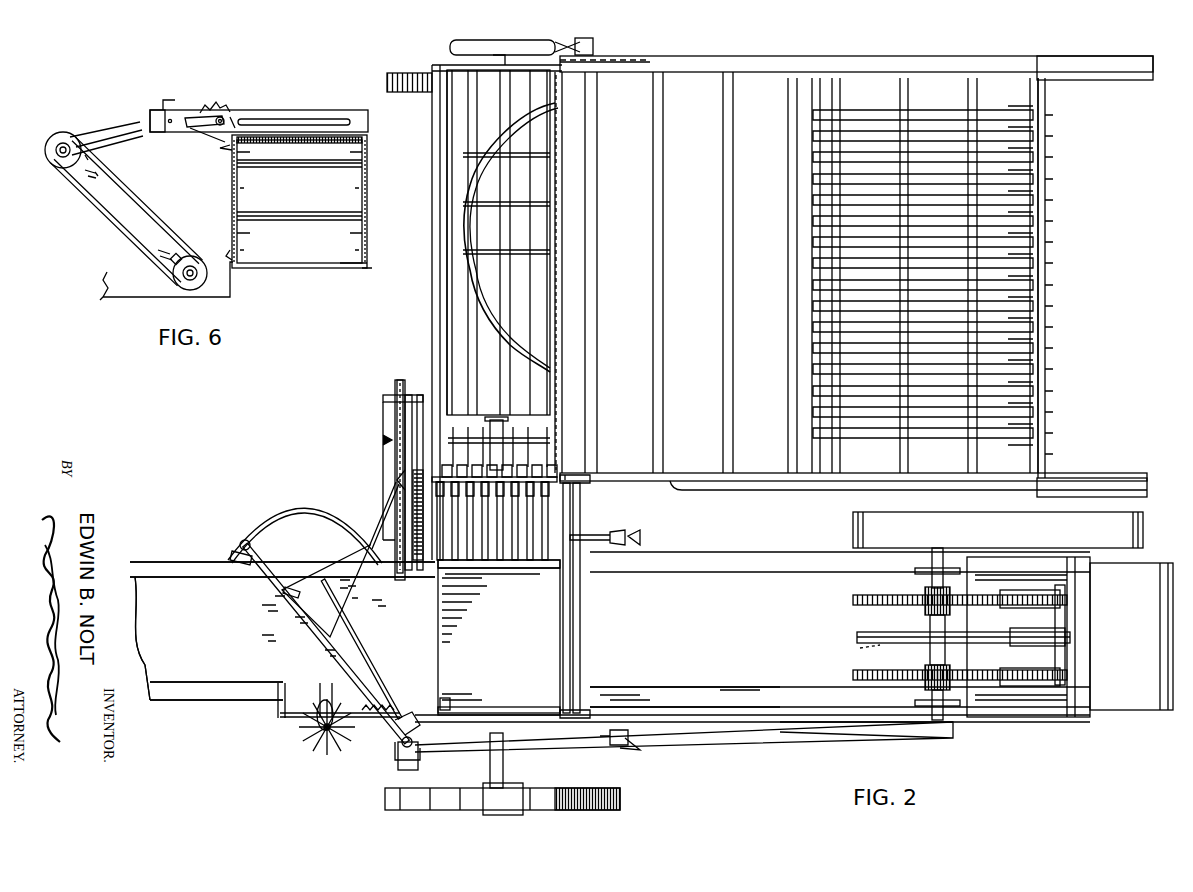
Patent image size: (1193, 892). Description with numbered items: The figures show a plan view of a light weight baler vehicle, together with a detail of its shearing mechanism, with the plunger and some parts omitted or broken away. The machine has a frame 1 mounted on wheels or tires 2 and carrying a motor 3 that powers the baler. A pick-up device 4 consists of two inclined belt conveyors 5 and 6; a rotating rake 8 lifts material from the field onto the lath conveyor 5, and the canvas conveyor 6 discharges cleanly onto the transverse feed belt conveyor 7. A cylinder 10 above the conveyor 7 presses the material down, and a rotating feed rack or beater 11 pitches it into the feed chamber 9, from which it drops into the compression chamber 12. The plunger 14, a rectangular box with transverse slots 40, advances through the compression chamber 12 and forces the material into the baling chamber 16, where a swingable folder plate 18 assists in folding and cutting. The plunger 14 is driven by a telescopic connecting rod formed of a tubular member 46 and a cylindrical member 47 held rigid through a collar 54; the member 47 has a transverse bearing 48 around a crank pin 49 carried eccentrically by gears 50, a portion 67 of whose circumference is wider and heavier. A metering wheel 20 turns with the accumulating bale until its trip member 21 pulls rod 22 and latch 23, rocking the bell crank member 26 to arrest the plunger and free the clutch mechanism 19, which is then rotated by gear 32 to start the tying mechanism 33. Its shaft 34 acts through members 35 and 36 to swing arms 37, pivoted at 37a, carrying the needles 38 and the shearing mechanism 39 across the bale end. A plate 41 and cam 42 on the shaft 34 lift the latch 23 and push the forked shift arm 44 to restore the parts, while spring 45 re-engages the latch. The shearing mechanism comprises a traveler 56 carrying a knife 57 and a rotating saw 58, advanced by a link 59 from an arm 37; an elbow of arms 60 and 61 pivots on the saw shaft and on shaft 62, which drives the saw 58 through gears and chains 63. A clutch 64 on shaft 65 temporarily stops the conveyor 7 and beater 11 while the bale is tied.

In FIG. 6, the frame 1 is at (366, 135).
In FIG. 2, the frame 1 is at (168, 560).
In FIG. 2, the wheels or tires 2 is at (400, 73).
In FIG. 2, the motor 3 is at (1013, 614).
In FIG. 2, the pick-up device 4 is at (722, 492).
In FIG. 2, the inclined belt conveyor 5 is at (948, 437).
In FIG. 2, the inclined belt conveyor 6 is at (801, 255).
In FIG. 2, the feed belt conveyor 7 is at (511, 237).
In FIG. 2, the rotating rake 8 is at (1047, 445).
In FIG. 2, the feed chamber 9 is at (499, 637).
In FIG. 2, the cylinder 10 is at (498, 242).
In FIG. 2, the rotating feed rack or beater 11 is at (552, 452).
In FIG. 2, the compression chamber 12 is at (492, 573).
In FIG. 6, the plunger 14 is at (293, 201).
In FIG. 2, the baling chamber 16 is at (282, 631).
In FIG. 6, the folder 18 is at (296, 122).
In FIG. 2, the clutch mechanism 19 is at (614, 748).
In FIG. 2, the metering wheel 20 is at (305, 738).
In FIG. 2, the trip member 21 is at (322, 690).
In FIG. 2, the rod 22 is at (278, 715).
In FIG. 2, the latch 23 is at (446, 706).
In FIG. 2, the bell crank member 26 is at (525, 735).
In FIG. 2, the gear 32 is at (635, 748).
In FIG. 2, the tying mechanism 33 is at (684, 755).
In FIG. 2, the shaft 34 is at (397, 700).
In FIG. 2, the member 35 is at (393, 742).
In FIG. 2, the member 36 is at (342, 622).
In FIG. 2, the arm 37 is at (255, 575).
In FIG. 2, the pivot 37a is at (325, 636).
In FIG. 2, the needles 38 is at (285, 515).
In FIG. 6, the shearing mechanism 39 is at (215, 91).
In FIG. 2, the shearing mechanism 39 is at (380, 440).
In FIG. 6, the transverse slots 40 is at (330, 170).
In FIG. 2, the plate 41 is at (412, 748).
In FIG. 2, the cam 42 is at (398, 762).
In FIG. 2, the forked shift arm 44 is at (470, 745).
In FIG. 2, the spring 45 is at (368, 705).
In FIG. 2, the tubular member 46 is at (857, 636).
In FIG. 2, the cylindrical member 47 is at (856, 655).
In FIG. 2, the transverse bearing 48 is at (1060, 655).
In FIG. 2, the crank pin 49 is at (1062, 690).
In FIG. 2, the gears 50 is at (853, 600).
In FIG. 2, the collar 54 is at (1020, 618).
In FIG. 6, the traveler 56 is at (170, 126).
In FIG. 6, the knife 57 is at (215, 135).
In FIG. 6, the saw 58 is at (225, 114).
In FIG. 2, the saw 58 is at (438, 583).
In FIG. 6, the link 59 is at (173, 95).
In FIG. 2, the link 59 is at (388, 520).
In FIG. 6, the arm 60 is at (97, 137).
In FIG. 2, the arm 60 is at (383, 402).
In FIG. 6, the arm 61 is at (118, 206).
In FIG. 2, the arm 61 is at (406, 392).
In FIG. 6, the shaft 62 is at (192, 268).
In FIG. 2, the shaft 62 is at (600, 533).
In FIG. 6, the gears and chains 63 is at (72, 134).
In FIG. 2, the gears and chains 63 is at (395, 384).
In FIG. 2, the clutch 64 is at (625, 710).
In FIG. 2, the shaft 65 is at (592, 640).
In FIG. 2, the portion of the circumference 67 is at (1030, 600).